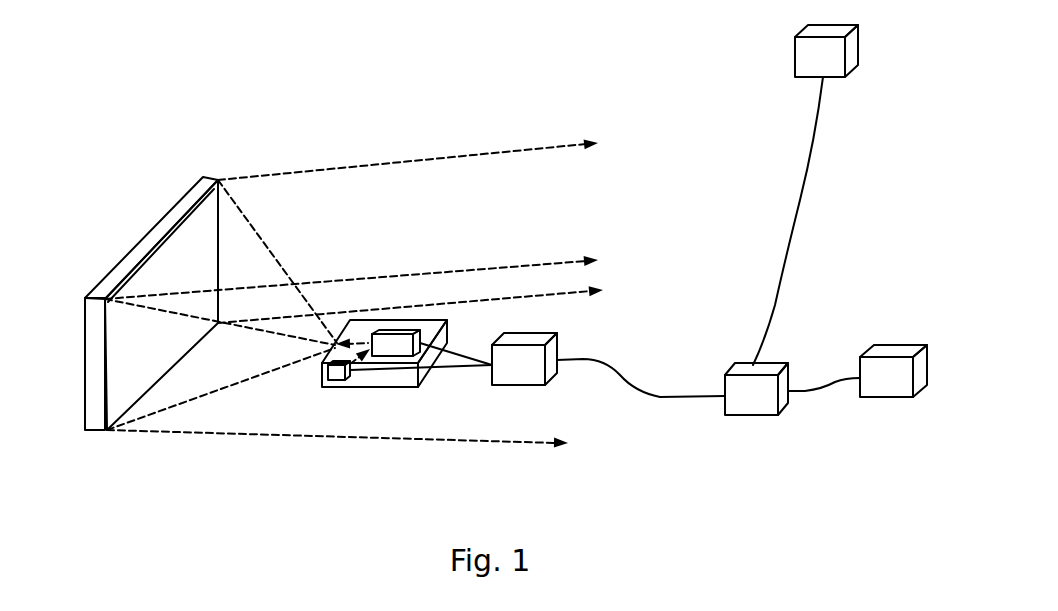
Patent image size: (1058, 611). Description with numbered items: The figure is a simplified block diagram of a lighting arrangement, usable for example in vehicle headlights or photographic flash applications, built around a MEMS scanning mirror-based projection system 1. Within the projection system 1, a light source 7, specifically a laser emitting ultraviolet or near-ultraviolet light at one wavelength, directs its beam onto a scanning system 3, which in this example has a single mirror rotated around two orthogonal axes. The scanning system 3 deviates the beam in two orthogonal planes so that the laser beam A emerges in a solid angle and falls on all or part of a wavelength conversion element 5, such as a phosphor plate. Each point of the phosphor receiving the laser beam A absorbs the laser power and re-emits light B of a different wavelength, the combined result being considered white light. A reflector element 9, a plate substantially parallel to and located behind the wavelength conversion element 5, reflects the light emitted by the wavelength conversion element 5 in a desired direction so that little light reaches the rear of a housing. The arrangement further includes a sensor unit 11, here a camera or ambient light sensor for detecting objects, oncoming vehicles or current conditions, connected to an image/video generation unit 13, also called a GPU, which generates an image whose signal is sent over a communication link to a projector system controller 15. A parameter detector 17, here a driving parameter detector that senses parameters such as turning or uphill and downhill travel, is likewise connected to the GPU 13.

The projection system 1 is at (372, 365).
The scanning system 3 is at (396, 333).
The wavelength conversion element 5 is at (180, 242).
The light source 7 is at (335, 387).
The reflector element 9 is at (207, 176).
The sensor unit 11 is at (795, 60).
The image/video generation unit 13 is at (750, 415).
The projector system controller 15 is at (503, 386).
The parameter detector 17 is at (888, 397).
The laser beam A is at (243, 210).
The light B is at (332, 166).